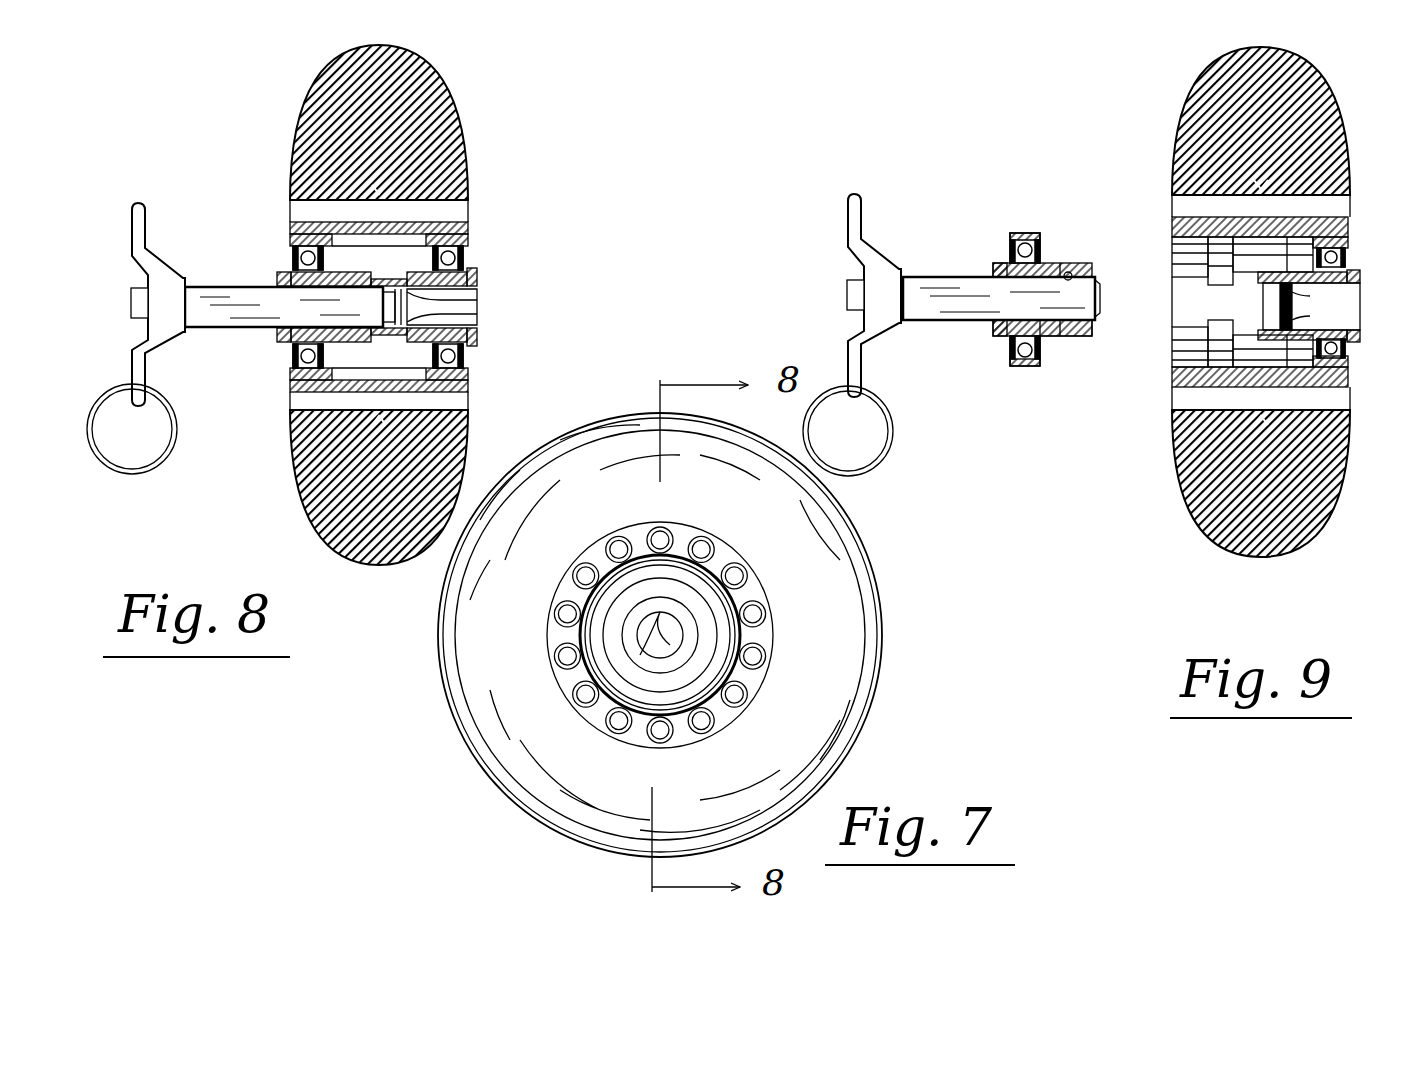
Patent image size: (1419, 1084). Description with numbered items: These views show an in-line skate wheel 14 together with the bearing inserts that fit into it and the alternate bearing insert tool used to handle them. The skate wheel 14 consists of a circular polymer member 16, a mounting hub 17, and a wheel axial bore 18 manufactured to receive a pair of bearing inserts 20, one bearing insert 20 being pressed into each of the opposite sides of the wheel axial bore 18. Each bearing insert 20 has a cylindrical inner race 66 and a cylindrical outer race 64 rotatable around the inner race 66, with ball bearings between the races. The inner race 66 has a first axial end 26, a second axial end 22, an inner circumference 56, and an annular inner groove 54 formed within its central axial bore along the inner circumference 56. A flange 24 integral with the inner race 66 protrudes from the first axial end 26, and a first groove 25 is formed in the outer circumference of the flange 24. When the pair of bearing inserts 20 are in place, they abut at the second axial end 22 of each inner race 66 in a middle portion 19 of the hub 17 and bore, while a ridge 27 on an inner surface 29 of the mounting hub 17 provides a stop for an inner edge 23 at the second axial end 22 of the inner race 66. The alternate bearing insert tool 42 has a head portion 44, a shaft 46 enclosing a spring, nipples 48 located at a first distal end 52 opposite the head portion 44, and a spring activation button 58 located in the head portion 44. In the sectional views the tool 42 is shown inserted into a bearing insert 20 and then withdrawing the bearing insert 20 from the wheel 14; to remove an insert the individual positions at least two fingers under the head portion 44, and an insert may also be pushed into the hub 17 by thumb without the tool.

In FIG. 8, the in-line skate wheel 14 is at (428, 60).
In FIG. 7, the in-line skate wheel 14 is at (876, 566).
In FIG. 9, the in-line skate wheel 14 is at (1308, 62).
In FIG. 8, the circular polymer member 16 is at (470, 170).
In FIG. 7, the circular polymer member 16 is at (853, 738).
In FIG. 9, the circular polymer member 16 is at (1350, 165).
In FIG. 8, the mounting hub 17 is at (465, 234).
In FIG. 7, the mounting hub 17 is at (606, 728).
In FIG. 9, the mounting hub 17 is at (1350, 231).
In FIG. 7, the wheel axial bore 18 is at (655, 640).
In FIG. 8, the middle portion 19 is at (376, 312).
In FIG. 8, the bearing insert 20 is at (463, 369).
In FIG. 7, the bearing insert 20 is at (585, 672).
In FIG. 9, the bearing insert 20 is at (1347, 366).
In FIG. 9, the second axial end 22 is at (1060, 330).
In FIG. 9, the inner edge 23 is at (1040, 352).
In FIG. 8, the flange 24 is at (480, 290).
In FIG. 7, the flange 24 is at (625, 633).
In FIG. 9, the flange 24 is at (998, 266).
In FIG. 8, the first groove 25 is at (290, 262).
In FIG. 9, the first groove 25 is at (1346, 276).
In FIG. 8, the first axial end 26 is at (280, 273).
In FIG. 9, the first axial end 26 is at (1350, 322).
In FIG. 9, the ridge 27 is at (1190, 290).
In FIG. 9, the inner surface 29 is at (1178, 270).
In FIG. 8, the alternate bearing insert tool 42 is at (207, 272).
In FIG. 9, the alternate bearing insert tool 42 is at (968, 260).
In FIG. 8, the head portion 44 is at (131, 229).
In FIG. 9, the head portion 44 is at (849, 222).
In FIG. 8, the shaft 46 is at (212, 332).
In FIG. 9, the shaft 46 is at (962, 315).
In FIG. 8, the nipples 48 is at (348, 283).
In FIG. 9, the nipples 48 is at (1042, 336).
In FIG. 8, the first distal end 52 is at (462, 309).
In FIG. 9, the first distal end 52 is at (1098, 292).
In FIG. 8, the annular inner groove 54 is at (470, 296).
In FIG. 9, the annular inner groove 54 is at (1322, 310).
In FIG. 8, the inner circumference 56 is at (470, 330).
In FIG. 7, the inner circumference 56 is at (665, 650).
In FIG. 9, the inner circumference 56 is at (1340, 286).
In FIG. 8, the spring activation button 58 is at (131, 305).
In FIG. 9, the spring activation button 58 is at (847, 300).
In FIG. 9, the outer race 64 is at (1028, 368).
In FIG. 9, the inner race 66 is at (1085, 268).